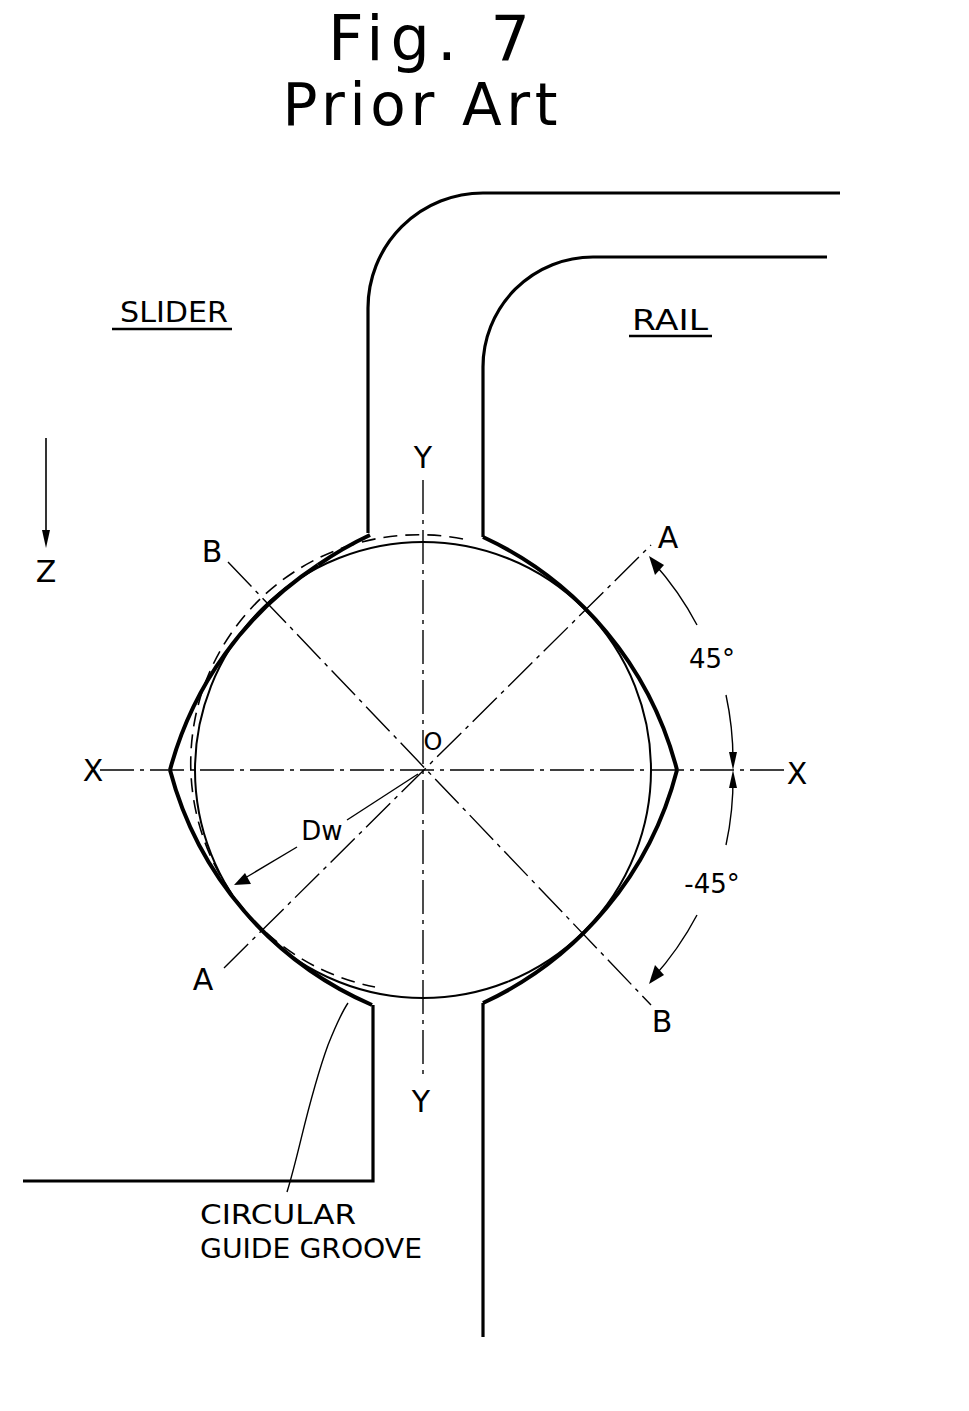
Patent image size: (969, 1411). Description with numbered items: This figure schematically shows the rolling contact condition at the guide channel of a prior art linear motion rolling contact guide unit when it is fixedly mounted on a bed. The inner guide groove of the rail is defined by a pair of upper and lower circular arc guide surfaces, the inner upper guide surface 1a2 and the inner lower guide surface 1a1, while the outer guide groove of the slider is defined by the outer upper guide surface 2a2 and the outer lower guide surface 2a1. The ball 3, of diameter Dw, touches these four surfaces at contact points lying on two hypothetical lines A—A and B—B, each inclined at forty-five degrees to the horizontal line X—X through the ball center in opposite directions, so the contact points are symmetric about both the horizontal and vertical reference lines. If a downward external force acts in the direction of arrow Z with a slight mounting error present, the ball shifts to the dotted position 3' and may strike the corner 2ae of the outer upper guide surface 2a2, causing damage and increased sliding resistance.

The ball 3 is at (423, 803).
The shifted ball position 3' is at (357, 734).
The corner of the outer upper guide surface 2ae is at (366, 532).
The outer upper guide surface 2a2 is at (208, 676).
The outer lower guide surface 2a1 is at (213, 877).
The inner upper guide surface 1a2 is at (423, 770).
The inner lower guide surface 1a1 is at (545, 976).